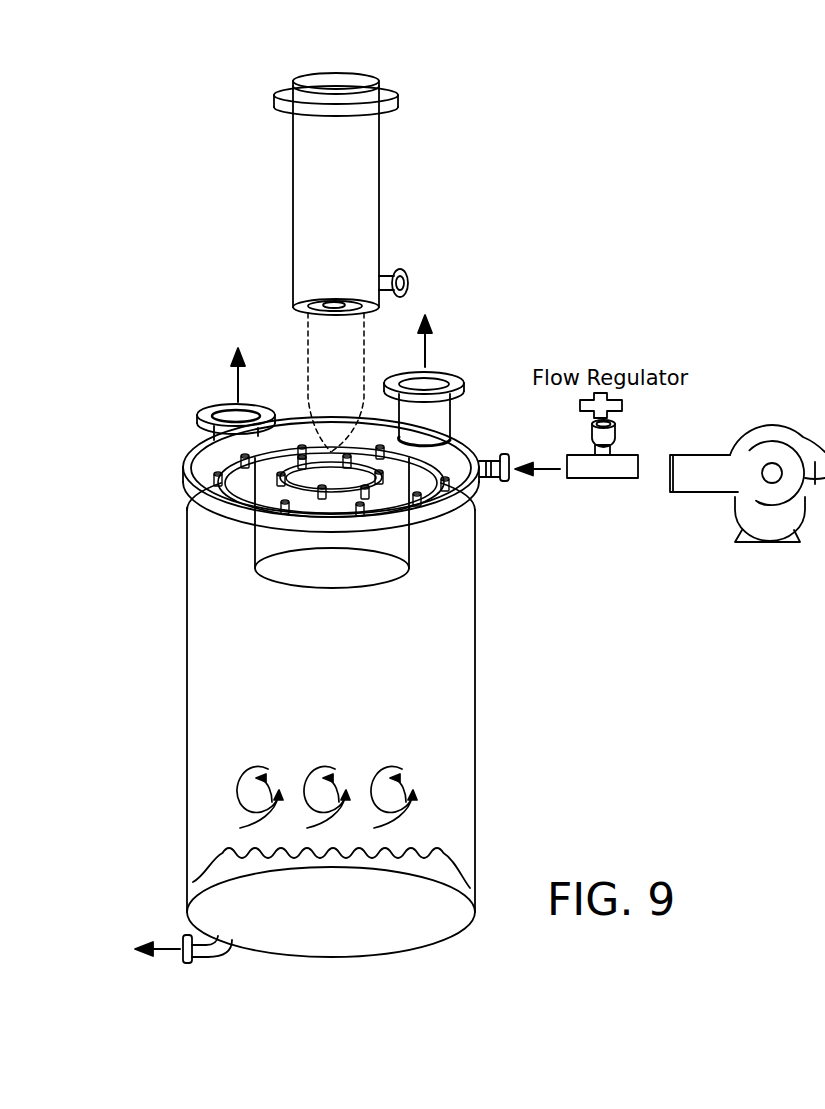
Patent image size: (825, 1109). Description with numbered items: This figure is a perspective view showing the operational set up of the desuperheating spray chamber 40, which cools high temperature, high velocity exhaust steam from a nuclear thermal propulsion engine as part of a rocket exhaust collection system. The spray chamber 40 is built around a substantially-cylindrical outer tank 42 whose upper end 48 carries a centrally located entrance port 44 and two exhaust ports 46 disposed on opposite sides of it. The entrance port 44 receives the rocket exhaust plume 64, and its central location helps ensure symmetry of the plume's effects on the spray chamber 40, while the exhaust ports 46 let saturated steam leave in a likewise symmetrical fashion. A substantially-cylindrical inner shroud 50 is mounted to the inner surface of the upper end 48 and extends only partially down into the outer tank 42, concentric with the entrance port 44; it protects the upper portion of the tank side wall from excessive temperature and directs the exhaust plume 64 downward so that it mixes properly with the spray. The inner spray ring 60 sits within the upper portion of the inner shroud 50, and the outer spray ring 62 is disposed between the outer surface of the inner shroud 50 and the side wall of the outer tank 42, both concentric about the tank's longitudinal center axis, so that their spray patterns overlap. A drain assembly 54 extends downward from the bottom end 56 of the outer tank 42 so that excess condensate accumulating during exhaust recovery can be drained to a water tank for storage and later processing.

The desuperheating spray chamber 40 is at (404, 732).
The outer tank 42 is at (477, 828).
The entrance port 44 is at (370, 398).
The exhaust ports 46 is at (200, 398).
The upper end 48 is at (182, 440).
The inner shroud 50 is at (424, 560).
The drain assembly 54 is at (177, 912).
The bottom end 56 is at (448, 953).
The inner spray ring 60 is at (298, 510).
The outer spray ring 62 is at (443, 505).
The rocket exhaust plume 64 is at (297, 345).